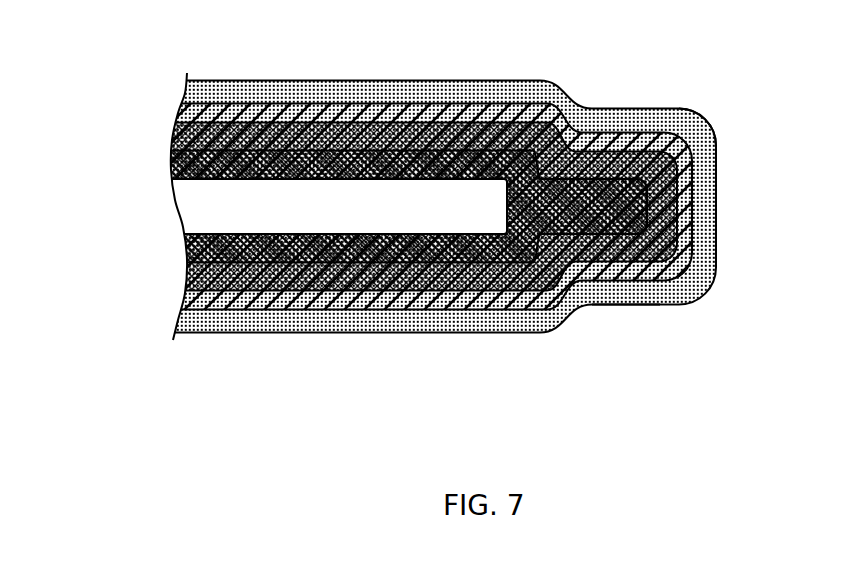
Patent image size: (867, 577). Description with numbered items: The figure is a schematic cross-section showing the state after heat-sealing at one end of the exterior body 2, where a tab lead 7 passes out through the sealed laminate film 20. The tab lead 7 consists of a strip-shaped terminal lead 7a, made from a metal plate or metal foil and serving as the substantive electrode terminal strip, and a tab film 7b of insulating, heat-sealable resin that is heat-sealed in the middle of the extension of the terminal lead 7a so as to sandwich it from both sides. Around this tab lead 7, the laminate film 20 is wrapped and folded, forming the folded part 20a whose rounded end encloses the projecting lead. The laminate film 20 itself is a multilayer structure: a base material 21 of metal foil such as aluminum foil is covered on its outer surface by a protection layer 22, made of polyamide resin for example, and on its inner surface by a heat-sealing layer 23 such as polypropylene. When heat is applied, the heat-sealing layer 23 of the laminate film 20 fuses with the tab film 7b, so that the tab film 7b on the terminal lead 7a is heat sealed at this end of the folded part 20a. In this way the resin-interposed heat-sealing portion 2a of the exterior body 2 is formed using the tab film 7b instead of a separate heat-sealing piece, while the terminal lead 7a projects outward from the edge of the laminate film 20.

The exterior body 2 is at (417, 222).
The resin-interposed heat-sealing portion 2a is at (623, 333).
The tab lead 7 is at (398, 294).
The terminal lead 7a is at (468, 213).
The tab film 7b is at (493, 246).
The laminate film 20 is at (371, 195).
The folded part 20a is at (727, 138).
The base material 21 is at (179, 110).
The protection layer 22 is at (184, 92).
The heat-sealing layer 23 is at (375, 207).